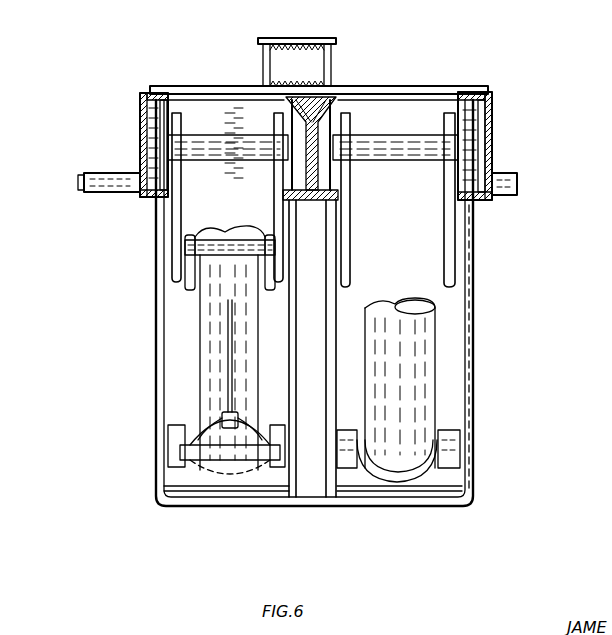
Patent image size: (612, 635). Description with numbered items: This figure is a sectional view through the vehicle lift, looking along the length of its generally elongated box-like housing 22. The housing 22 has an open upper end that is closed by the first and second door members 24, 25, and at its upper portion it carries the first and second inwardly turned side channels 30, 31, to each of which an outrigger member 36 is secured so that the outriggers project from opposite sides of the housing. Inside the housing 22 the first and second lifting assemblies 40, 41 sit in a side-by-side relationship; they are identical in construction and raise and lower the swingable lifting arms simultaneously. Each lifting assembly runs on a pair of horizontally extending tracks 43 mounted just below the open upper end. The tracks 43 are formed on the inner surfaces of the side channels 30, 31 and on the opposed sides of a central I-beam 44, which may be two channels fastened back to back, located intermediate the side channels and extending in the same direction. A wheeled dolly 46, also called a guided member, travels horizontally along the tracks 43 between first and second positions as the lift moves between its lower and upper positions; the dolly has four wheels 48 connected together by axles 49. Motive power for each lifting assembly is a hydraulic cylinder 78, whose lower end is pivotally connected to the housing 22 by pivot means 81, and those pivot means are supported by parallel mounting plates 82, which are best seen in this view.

The housing 22 is at (470, 338).
The first door member 24 is at (222, 104).
The second door member 25 is at (405, 104).
The first inwardly turned side channel 30 is at (140, 112).
The second inwardly turned side channel 31 is at (495, 128).
The outrigger member 36 is at (100, 170).
The first lifting assembly 40 is at (237, 512).
The second lifting assembly 41 is at (422, 512).
The track 43 is at (152, 173).
The I-beam 44 is at (330, 97).
The wheeled dolly 46 is at (176, 134).
The wheel 48 is at (157, 123).
The axle 49 is at (205, 152).
The hydraulic cylinder 78 is at (205, 380).
The pivot means 81 is at (178, 452).
The parallel mounting plates 82 is at (287, 350).